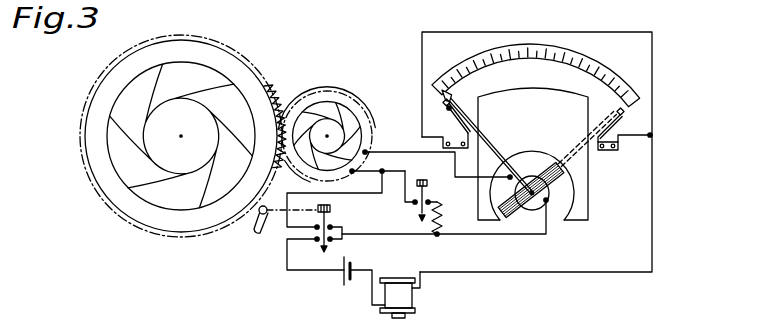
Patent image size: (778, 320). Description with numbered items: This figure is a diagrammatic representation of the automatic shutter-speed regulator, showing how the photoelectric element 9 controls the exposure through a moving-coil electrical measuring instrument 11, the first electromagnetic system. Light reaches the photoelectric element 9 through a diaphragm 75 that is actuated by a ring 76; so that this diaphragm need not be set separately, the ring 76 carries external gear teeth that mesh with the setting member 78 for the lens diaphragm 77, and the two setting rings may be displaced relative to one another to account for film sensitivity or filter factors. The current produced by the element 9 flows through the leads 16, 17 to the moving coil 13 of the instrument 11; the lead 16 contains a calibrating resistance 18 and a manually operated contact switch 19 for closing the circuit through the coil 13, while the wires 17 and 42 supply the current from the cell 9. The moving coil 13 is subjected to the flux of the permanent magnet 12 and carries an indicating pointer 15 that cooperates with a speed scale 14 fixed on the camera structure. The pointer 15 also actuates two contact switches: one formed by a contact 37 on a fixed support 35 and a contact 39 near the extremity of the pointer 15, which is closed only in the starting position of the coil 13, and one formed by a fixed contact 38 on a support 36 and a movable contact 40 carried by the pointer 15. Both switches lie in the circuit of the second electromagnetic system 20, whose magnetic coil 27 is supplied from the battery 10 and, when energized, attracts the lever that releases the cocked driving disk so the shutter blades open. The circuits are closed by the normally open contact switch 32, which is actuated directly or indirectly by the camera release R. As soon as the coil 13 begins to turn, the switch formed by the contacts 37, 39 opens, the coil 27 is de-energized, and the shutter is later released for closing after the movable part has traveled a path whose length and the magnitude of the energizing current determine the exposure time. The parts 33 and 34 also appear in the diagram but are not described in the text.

The lens diaphragm 77 is at (188, 72).
The setting member for the lens diaphragm 78 is at (252, 70).
The ring 76 is at (293, 101).
The diaphragm 75 is at (328, 127).
The photoelectric element 9 is at (333, 125).
The lead 16 is at (366, 151).
The lead 17 is at (397, 151).
The wire 42 is at (365, 194).
The contact switch 19 is at (426, 195).
The calibrating resistance 18 is at (441, 217).
The contact switch 32 is at (332, 211).
The camera release R is at (252, 228).
The battery 10 is at (342, 277).
The lead 34 is at (365, 270).
The magnetic coil 27 is at (412, 300).
The second electromagnetic system 20 is at (426, 290).
The housing 33 is at (421, 42).
The moving coil type electrical measuring instrument 11 is at (593, 171).
The speed scale 14 is at (523, 50).
The permanent magnet 12 is at (560, 92).
The indicating pointer 15 is at (491, 135).
The moving coil 13 is at (553, 187).
The movable contact 40 is at (450, 98).
The contact 39 is at (441, 96).
The contact 37 is at (447, 108).
The fixed support 35 is at (462, 120).
The contact 38 is at (623, 112).
The fixed support 36 is at (650, 135).